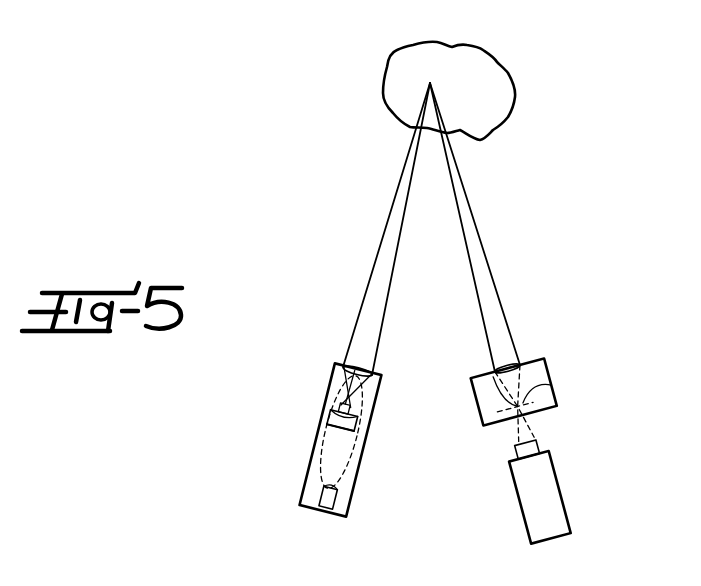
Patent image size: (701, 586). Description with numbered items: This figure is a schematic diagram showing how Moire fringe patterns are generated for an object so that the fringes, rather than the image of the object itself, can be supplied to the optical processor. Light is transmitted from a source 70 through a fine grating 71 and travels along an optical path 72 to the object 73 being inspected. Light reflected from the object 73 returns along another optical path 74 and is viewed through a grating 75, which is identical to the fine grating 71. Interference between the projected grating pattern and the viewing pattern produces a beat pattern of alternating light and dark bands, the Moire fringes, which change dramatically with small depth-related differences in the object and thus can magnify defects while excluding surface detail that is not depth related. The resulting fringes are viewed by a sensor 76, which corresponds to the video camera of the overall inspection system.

The source 70 is at (326, 505).
The fine grating 71 is at (332, 423).
The optical path 72 is at (370, 328).
The object 73 is at (486, 80).
The optical path 74 is at (498, 343).
The grating 75 is at (549, 390).
The sensor 76 is at (545, 486).